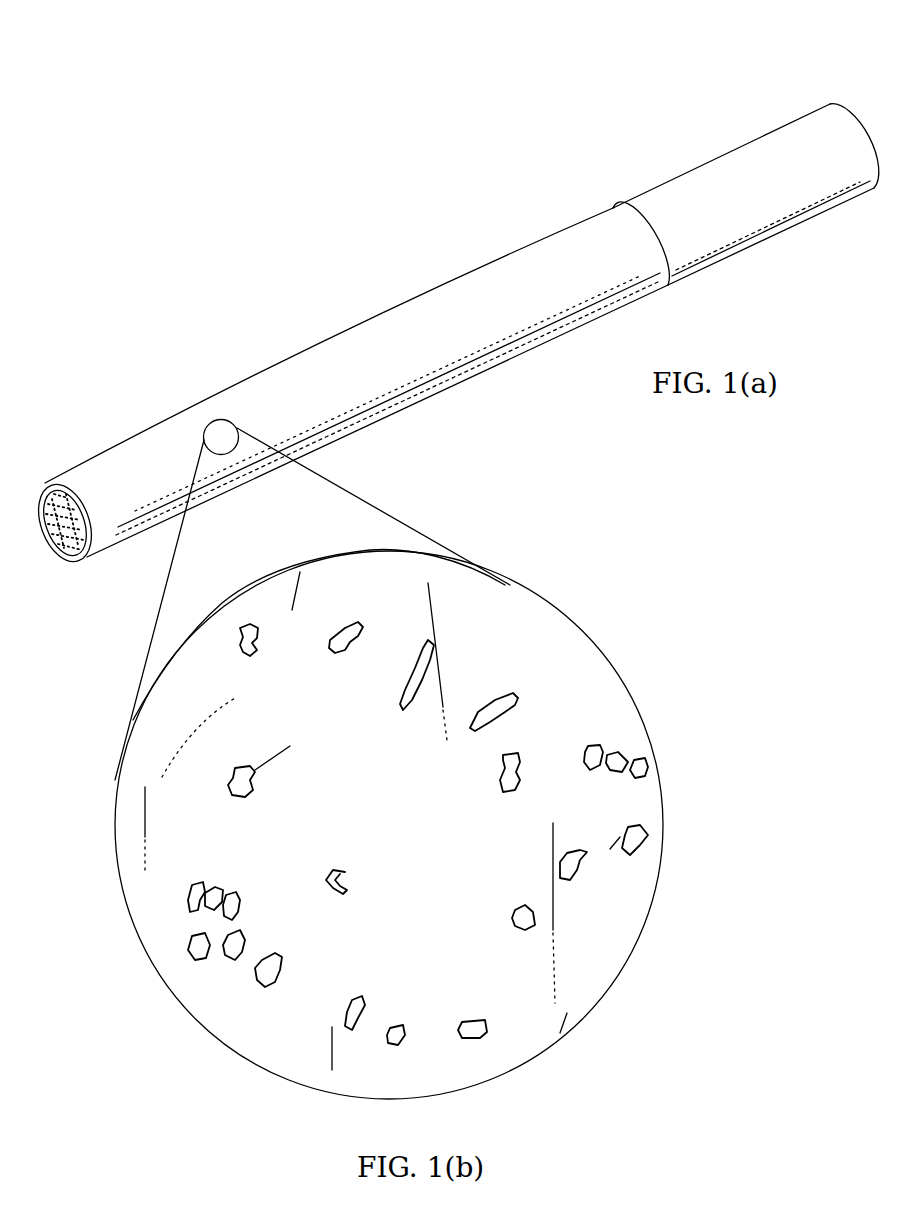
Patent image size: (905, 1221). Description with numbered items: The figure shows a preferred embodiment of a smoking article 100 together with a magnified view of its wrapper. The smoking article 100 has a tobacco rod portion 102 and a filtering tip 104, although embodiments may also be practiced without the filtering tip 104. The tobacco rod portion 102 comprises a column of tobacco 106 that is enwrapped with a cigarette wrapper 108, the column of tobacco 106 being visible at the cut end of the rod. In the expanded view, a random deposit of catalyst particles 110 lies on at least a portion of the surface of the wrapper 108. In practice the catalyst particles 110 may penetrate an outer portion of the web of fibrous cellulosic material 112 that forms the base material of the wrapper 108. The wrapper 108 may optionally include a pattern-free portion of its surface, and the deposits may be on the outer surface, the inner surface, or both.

In FIG. 1a, the smoking article 100 is at (238, 157).
In FIG. 1a, the tobacco rod portion 102 is at (398, 327).
In FIG. 1a, the filtering tip 104 is at (748, 163).
In FIG. 1a, the column of tobacco 106 is at (53, 540).
In FIG. 1a, the wrapper 108 is at (117, 457).
In FIG. 1b, the wrapper 108 is at (672, 810).
In FIG. 1b, the catalyst particles 110 is at (513, 700).
In FIG. 1b, the web of fibrous cellulosic material 112 is at (215, 811).